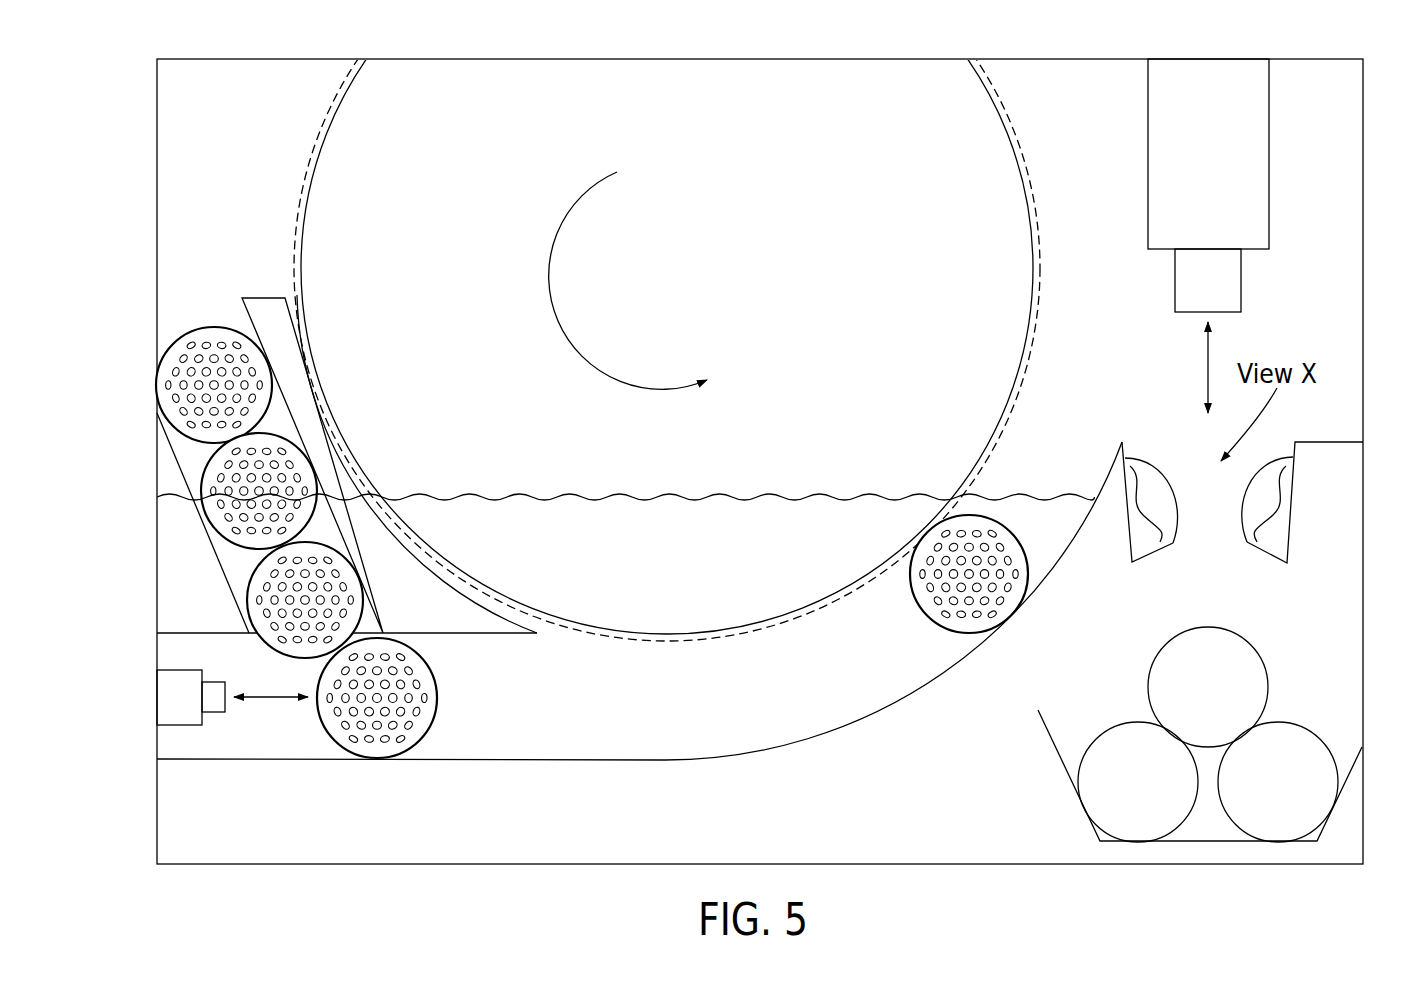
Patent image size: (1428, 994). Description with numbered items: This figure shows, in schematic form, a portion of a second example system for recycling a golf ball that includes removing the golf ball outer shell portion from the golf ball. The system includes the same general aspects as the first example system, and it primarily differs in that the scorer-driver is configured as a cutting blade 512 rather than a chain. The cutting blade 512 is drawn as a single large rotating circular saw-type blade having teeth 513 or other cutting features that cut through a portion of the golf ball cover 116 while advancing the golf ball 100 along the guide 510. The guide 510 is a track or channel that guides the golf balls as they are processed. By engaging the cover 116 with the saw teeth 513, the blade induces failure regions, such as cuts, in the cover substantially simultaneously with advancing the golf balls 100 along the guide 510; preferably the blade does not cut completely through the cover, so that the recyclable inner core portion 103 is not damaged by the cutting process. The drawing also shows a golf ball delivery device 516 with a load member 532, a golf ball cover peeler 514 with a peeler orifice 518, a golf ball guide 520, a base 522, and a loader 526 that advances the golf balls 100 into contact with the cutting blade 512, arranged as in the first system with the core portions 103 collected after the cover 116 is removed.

The golf ball 100 is at (387, 748).
The core portion 103 is at (1247, 675).
The golf ball cover 116 is at (1270, 482).
The guide 510 is at (890, 708).
The cutting blade 512 is at (358, 148).
The teeth 513 is at (312, 175).
The holder 514 is at (1299, 420).
The hopper 516 is at (1298, 192).
The outlet 518 is at (1196, 546).
The guide 520 is at (200, 310).
The base 522 is at (186, 779).
The pusher 526 is at (178, 611).
The nozzle 532 is at (1228, 288).